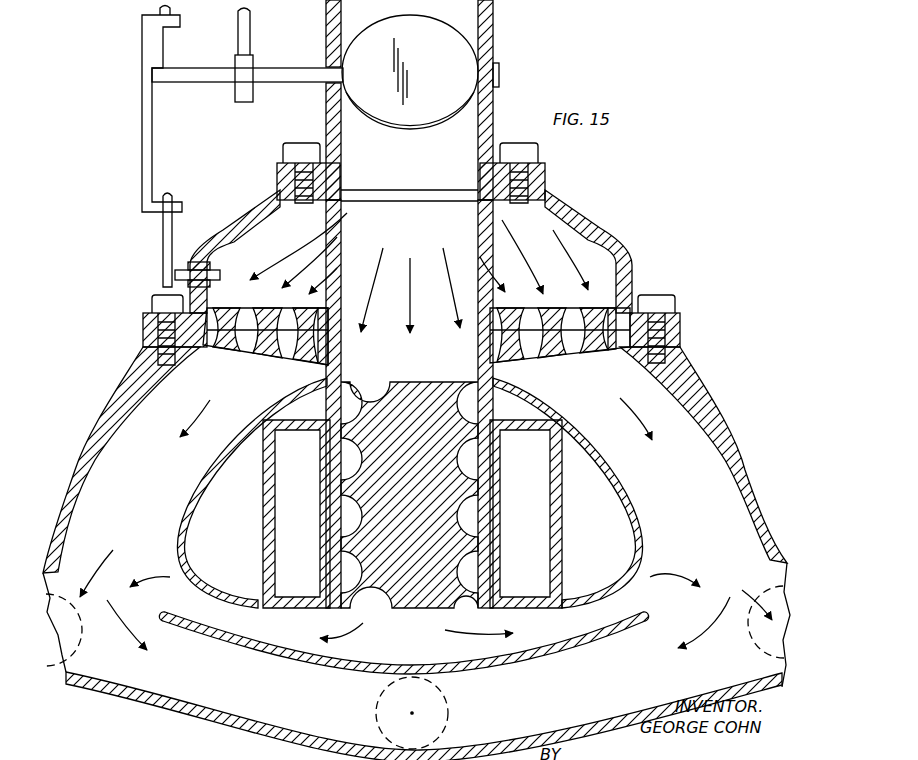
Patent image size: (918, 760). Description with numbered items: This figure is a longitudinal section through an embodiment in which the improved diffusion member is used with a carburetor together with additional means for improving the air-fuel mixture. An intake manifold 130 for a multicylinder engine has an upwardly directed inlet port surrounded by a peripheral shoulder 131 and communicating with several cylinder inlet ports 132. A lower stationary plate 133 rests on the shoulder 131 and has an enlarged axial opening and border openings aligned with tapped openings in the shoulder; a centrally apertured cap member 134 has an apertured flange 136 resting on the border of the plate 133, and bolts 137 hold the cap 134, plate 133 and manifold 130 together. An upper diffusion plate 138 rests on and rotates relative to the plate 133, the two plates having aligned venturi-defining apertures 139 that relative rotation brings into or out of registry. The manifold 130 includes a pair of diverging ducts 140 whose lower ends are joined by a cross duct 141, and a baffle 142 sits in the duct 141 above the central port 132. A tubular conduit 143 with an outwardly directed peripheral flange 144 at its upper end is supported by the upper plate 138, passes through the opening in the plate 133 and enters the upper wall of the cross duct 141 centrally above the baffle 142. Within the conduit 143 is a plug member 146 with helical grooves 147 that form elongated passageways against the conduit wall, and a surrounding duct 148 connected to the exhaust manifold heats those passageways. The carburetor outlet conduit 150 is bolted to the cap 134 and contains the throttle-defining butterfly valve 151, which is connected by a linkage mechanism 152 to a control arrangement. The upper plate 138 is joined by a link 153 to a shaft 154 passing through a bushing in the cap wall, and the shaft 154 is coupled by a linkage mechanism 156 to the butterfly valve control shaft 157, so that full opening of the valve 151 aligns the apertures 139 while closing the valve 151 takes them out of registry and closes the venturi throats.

The intake manifold 130 is at (738, 426).
The peripheral shoulder 131 is at (146, 346).
The cylinder inlet ports 132 is at (757, 637).
The lower stationary plate 133 is at (608, 345).
The cap member 134 is at (560, 208).
The apertured flange 136 is at (683, 326).
The bolts 137 is at (662, 302).
The upper diffusion plate 138 is at (617, 313).
The venturi-defining apertures 139 is at (272, 315).
The diverging ducts 140 is at (724, 483).
The cross duct 141 is at (237, 690).
The baffle 142 is at (530, 660).
The tubular conduit 143 is at (491, 372).
The peripheral flange 144 is at (491, 308).
The plug member 146 is at (427, 585).
The helical grooves 147 is at (488, 423).
The duct 148 is at (573, 428).
The outlet conduit 150 is at (494, 33).
The butterfly valve 151 is at (357, 60).
The linkage mechanism 152 is at (240, 28).
The link 153 is at (232, 287).
The shaft 154 is at (178, 277).
The linkage mechanism 156 is at (145, 157).
The butterfly valve control shaft 157 is at (283, 78).